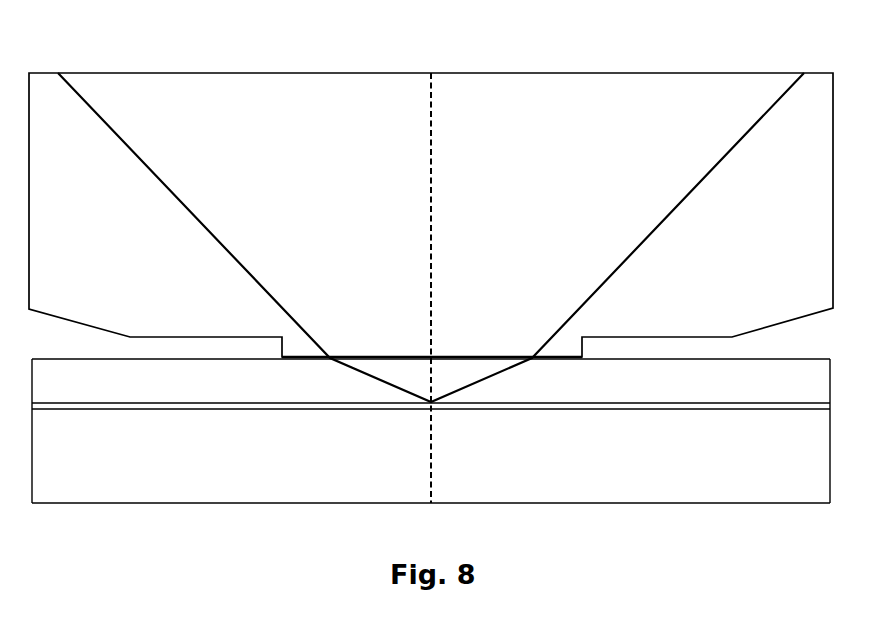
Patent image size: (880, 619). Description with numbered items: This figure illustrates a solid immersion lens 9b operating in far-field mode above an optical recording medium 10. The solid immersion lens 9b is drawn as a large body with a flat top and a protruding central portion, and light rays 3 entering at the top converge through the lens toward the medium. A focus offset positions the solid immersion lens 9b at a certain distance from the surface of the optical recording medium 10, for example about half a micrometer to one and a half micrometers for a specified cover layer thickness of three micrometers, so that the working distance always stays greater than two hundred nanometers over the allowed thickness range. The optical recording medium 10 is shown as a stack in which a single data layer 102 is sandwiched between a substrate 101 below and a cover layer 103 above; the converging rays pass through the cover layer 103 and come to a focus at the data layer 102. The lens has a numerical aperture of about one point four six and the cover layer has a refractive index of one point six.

The light beam 3 is at (72, 82).
The solid immersion lens 9b is at (633, 70).
The optical recording medium 10 is at (247, 508).
The substrate 101 is at (163, 500).
The data layer 102 is at (162, 410).
The cover layer 103 is at (120, 363).